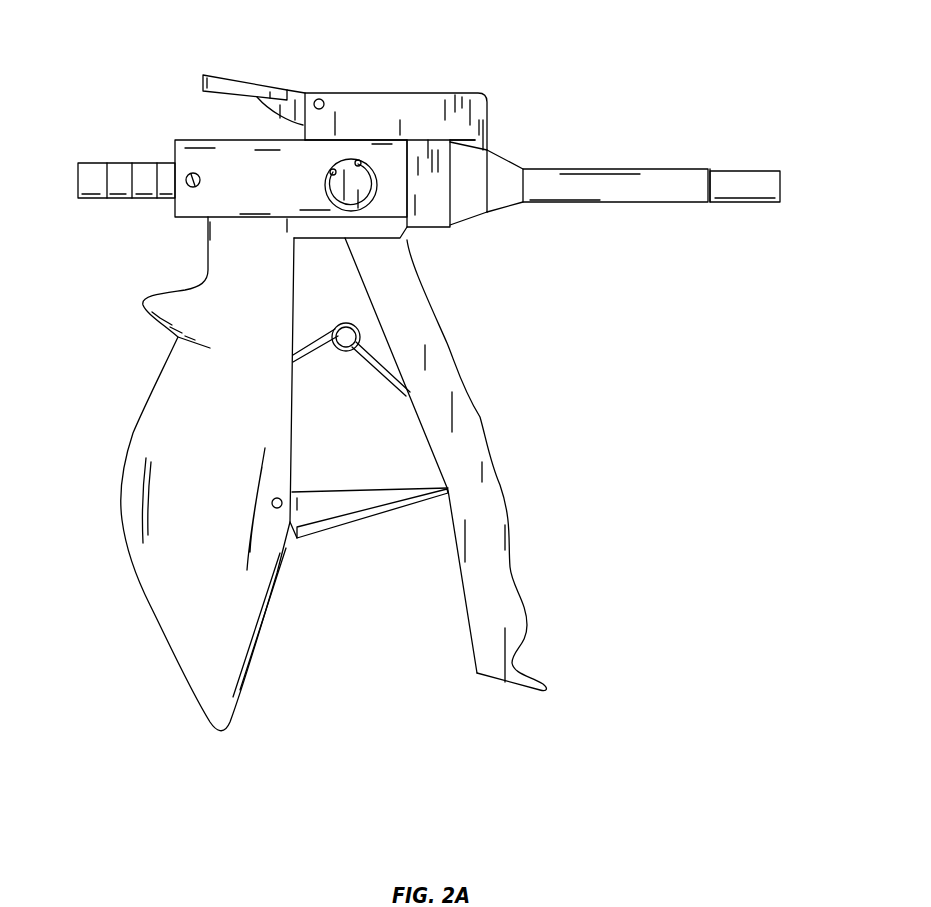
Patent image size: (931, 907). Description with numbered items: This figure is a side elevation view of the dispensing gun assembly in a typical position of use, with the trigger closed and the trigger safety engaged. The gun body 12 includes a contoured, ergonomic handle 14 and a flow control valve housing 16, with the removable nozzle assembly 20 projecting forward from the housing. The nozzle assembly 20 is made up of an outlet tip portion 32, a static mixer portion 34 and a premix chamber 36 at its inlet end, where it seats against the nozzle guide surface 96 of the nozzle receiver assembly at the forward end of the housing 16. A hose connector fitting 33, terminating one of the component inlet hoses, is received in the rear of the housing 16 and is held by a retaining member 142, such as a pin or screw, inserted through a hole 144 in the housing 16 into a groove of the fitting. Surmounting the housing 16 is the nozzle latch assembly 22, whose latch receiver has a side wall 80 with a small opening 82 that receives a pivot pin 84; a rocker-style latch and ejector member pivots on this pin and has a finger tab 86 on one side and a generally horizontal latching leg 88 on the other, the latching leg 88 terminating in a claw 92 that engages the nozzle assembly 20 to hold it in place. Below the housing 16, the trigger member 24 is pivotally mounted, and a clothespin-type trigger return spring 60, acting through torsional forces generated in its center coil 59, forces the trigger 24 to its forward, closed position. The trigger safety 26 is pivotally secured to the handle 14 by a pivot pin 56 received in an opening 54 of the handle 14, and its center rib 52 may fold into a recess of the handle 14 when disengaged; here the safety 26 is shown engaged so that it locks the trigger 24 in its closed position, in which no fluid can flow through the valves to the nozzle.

The gun body 12 is at (121, 427).
The handle 14 is at (137, 583).
The flow control valve housing 16 is at (210, 140).
The removable nozzle assembly 20 is at (620, 169).
The nozzle latch assembly 22 is at (213, 75).
The trigger member 24 is at (501, 476).
The trigger safety 26 is at (370, 521).
The outlet tip portion 32 is at (730, 205).
The fitting 33 is at (131, 163).
The static mixer portion 34 is at (612, 205).
The premix chamber 36 is at (470, 222).
The center rib 52 is at (372, 489).
The opening 54 is at (278, 497).
The pivot pin 56 is at (272, 506).
The center coil 59 is at (348, 322).
The trigger return spring 60 is at (363, 353).
The side wall 80 is at (379, 98).
The small opening 82 is at (326, 106).
The pivot pin 84 is at (322, 99).
The finger tab 86 is at (246, 78).
The latching leg 88 is at (466, 93).
The claw 92 is at (489, 134).
The nozzle guide surface 96 is at (428, 150).
The retaining member 142 is at (197, 176).
The hole 144 is at (198, 185).